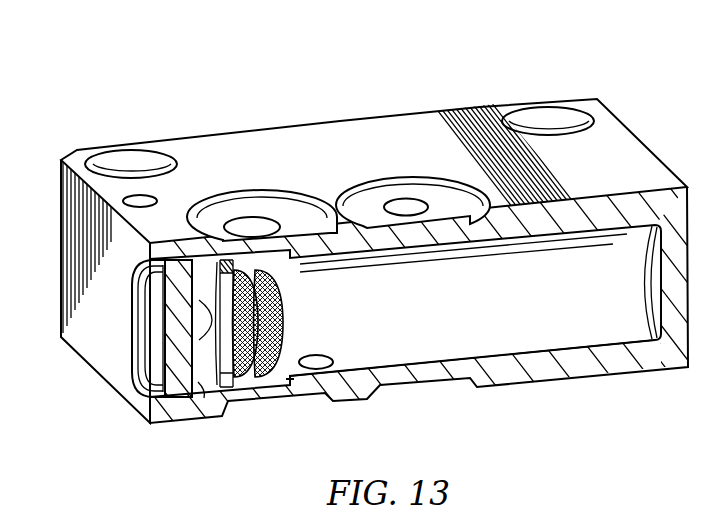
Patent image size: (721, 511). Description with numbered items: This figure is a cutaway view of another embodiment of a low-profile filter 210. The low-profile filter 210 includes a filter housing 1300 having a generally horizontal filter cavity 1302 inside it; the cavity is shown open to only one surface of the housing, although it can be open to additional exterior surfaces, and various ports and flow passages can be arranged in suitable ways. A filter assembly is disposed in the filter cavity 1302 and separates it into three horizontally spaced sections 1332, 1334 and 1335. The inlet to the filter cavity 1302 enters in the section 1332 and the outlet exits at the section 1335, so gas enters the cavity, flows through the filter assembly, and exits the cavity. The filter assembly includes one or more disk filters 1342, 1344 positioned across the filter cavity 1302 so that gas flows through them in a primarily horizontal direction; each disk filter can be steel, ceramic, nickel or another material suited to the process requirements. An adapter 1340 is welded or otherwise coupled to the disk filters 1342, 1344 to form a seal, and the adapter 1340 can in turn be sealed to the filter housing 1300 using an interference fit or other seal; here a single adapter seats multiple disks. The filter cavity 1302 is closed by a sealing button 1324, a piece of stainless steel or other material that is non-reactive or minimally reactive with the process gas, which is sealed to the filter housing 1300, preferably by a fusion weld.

The low-profile filter 210 is at (410, 76).
The filter housing 1300 is at (267, 140).
The filter cavity 1302 is at (475, 307).
The sealing button 1324 is at (157, 338).
The section 1332 is at (207, 380).
The section 1334 is at (287, 382).
The section 1335 is at (426, 347).
The adapter 1340 is at (253, 400).
The disk filter 1342 is at (285, 325).
The disk filter 1344 is at (287, 304).